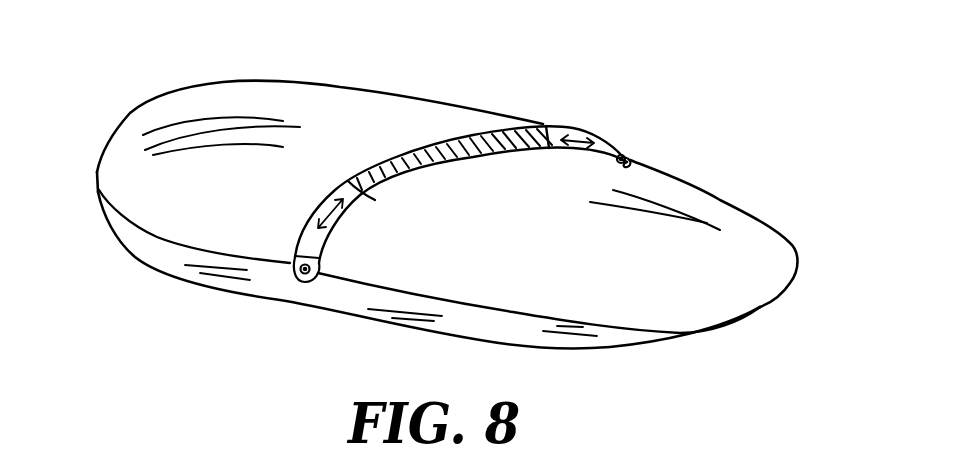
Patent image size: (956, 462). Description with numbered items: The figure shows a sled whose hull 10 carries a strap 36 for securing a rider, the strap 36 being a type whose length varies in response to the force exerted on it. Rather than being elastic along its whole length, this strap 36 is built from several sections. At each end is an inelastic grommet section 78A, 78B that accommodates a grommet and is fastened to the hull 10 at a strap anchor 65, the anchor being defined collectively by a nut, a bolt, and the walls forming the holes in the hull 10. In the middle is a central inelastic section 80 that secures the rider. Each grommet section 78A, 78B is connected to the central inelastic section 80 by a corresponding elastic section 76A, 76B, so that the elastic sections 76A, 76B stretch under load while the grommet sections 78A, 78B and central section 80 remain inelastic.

The hull 10 is at (800, 241).
The strap 36 is at (466, 177).
The strap anchor 65 is at (429, 263).
The elastic section 76A is at (322, 210).
The elastic section 76B is at (583, 128).
The inelastic grommet section 78A is at (340, 254).
The inelastic grommet section 78B is at (630, 155).
The central inelastic section 80 is at (416, 151).